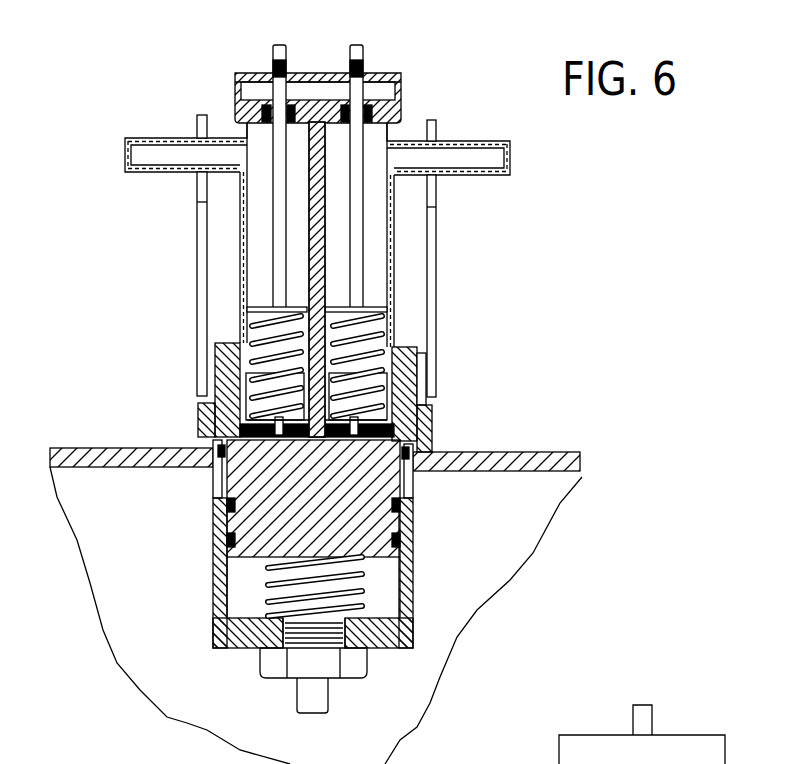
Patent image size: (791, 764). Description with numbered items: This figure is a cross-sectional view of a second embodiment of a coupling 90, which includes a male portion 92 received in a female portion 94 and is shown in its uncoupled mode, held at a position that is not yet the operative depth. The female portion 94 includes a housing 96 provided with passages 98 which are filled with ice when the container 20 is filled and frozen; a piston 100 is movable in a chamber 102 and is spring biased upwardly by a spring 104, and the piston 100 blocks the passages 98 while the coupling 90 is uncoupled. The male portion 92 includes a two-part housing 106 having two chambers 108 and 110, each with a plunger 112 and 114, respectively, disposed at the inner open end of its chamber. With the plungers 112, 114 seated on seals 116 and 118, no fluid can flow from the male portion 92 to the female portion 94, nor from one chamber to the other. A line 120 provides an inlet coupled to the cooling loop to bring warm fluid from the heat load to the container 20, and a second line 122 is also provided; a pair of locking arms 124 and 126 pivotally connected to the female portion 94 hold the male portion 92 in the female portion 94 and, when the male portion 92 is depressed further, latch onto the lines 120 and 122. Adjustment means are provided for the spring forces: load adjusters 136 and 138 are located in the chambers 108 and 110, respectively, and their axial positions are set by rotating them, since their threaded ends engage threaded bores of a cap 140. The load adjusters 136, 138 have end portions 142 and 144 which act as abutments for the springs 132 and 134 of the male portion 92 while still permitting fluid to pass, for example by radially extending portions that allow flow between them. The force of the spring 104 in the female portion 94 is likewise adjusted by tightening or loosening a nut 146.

The container 20 is at (100, 446).
The coupling 90 is at (550, 262).
The male portion 92 is at (410, 112).
The female portion 94 is at (420, 552).
The housing 96 is at (213, 530).
The passages 98 is at (205, 480).
The piston 100 is at (213, 567).
The chamber 102 is at (382, 585).
The spring 104 is at (228, 603).
The two-part housing 106 is at (367, 288).
The chamber 108 is at (378, 211).
The chamber 110 is at (243, 262).
The plunger 112 is at (420, 400).
The plunger 114 is at (214, 397).
The seal 116 is at (398, 433).
The seal 118 is at (230, 427).
The line 120 is at (490, 143).
The line 122 is at (165, 138).
The locking arm 124 is at (197, 223).
The locking arm 126 is at (437, 247).
The spring 132 is at (385, 330).
The spring 134 is at (243, 317).
The load adjuster 136 is at (364, 53).
The load adjuster 138 is at (276, 56).
The cap 140 is at (373, 81).
The end portion 142 is at (333, 297).
The end portion 144 is at (262, 258).
The nut 146 is at (322, 670).